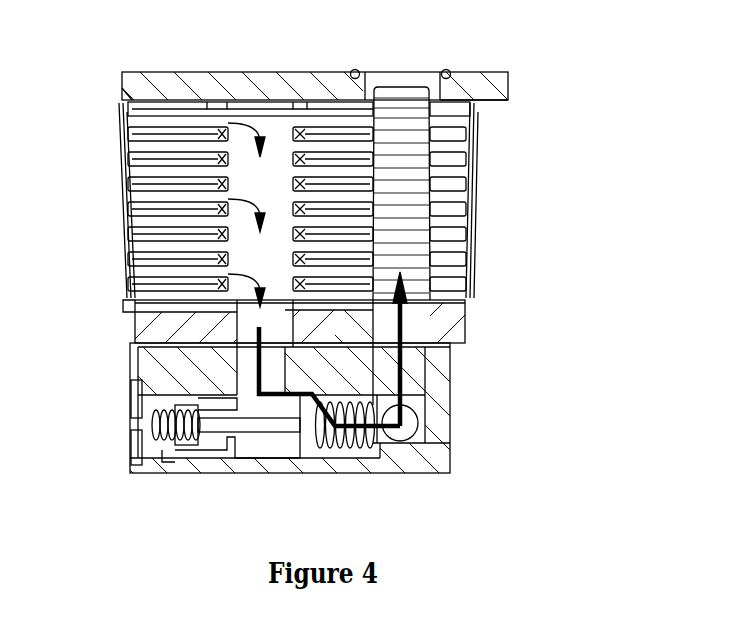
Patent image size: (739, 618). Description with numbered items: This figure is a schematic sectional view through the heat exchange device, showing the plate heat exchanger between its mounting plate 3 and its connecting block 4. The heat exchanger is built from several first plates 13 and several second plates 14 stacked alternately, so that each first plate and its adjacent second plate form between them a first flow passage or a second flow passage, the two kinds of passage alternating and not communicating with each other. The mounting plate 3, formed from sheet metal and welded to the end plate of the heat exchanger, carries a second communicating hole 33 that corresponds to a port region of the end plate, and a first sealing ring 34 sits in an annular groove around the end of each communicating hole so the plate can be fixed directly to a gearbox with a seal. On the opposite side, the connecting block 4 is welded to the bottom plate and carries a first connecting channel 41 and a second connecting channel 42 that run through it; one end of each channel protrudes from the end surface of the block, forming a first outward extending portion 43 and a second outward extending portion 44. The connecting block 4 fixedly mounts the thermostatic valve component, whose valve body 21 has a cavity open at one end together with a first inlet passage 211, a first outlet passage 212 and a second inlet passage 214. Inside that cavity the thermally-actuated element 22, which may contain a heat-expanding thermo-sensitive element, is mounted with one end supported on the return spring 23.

The mounting plate 3 is at (183, 90).
The second communicating hole 33 is at (385, 84).
The first sealing ring 34 is at (352, 70).
The second plate 14 is at (150, 163).
The first plate 13 is at (217, 203).
The connecting block 4 is at (200, 318).
The first outward extending portion 43 is at (123, 310).
The first connecting channel 41 is at (235, 320).
The second outward extending portion 44 is at (430, 300).
The second connecting channel 42 is at (432, 302).
The valve body 21 is at (238, 463).
The first inlet passage 211 is at (275, 364).
The first outlet passage 212 is at (410, 370).
The second inlet passage 214 is at (418, 425).
The thermally-actuated element 22 is at (307, 441).
The return spring 23 is at (380, 443).